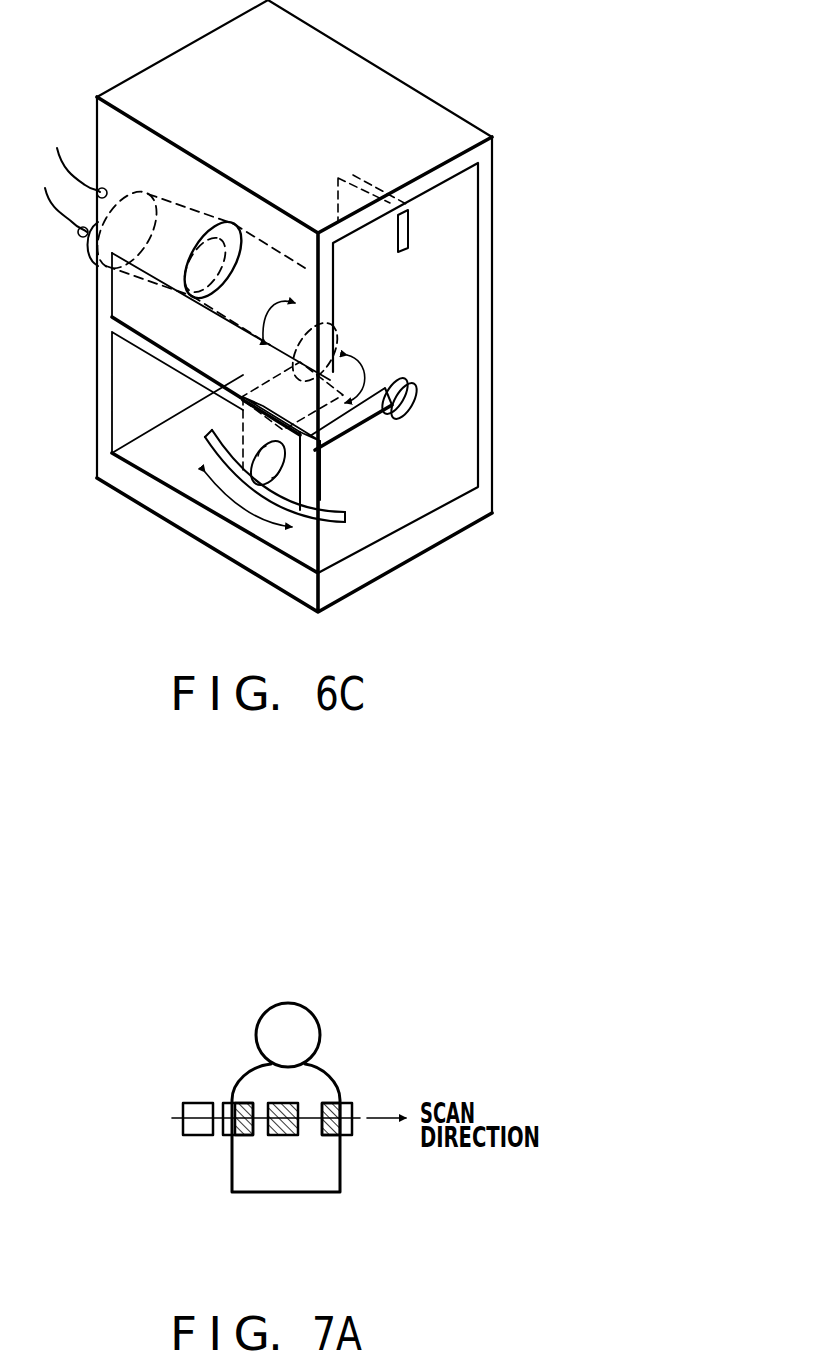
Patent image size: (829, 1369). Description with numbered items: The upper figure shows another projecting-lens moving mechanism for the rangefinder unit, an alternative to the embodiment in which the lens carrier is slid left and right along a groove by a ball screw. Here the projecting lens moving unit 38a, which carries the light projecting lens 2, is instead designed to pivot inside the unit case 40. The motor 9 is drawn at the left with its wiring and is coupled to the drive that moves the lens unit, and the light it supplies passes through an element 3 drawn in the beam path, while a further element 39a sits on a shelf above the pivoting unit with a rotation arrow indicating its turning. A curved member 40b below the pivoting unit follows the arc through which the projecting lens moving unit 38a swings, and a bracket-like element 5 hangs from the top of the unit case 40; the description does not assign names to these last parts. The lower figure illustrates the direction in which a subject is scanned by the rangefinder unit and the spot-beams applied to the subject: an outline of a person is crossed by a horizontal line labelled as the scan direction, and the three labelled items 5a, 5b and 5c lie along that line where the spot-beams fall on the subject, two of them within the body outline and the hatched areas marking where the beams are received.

In FIG. 6C, the light projecting lens 2 is at (265, 485).
In FIG. 6C, the lens 3 is at (218, 232).
In FIG. 6C, the light receiving element 5 is at (406, 252).
In FIG. 6C, the motor 9 is at (92, 255).
In FIG. 6C, the projecting lens moving unit 38a is at (308, 478).
In FIG. 6C, the lens 39a is at (373, 362).
In FIG. 6C, the unit case 40 is at (458, 527).
In FIG. 6C, the guide 40b is at (343, 510).
In FIG. 7A, the light receiving element 5a is at (228, 1138).
In FIG. 7A, the light receiving element 5b is at (286, 1140).
In FIG. 7A, the light receiving element 5c is at (340, 1105).